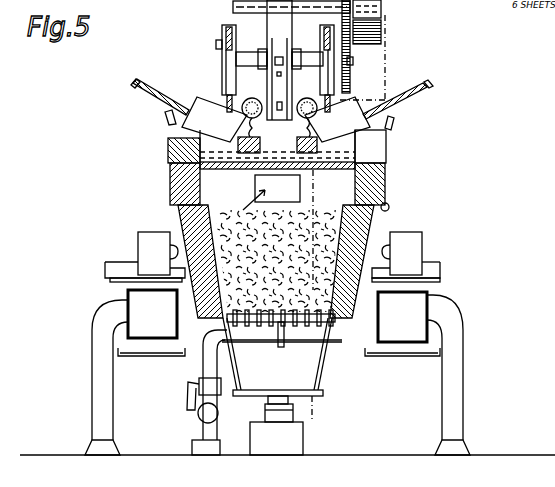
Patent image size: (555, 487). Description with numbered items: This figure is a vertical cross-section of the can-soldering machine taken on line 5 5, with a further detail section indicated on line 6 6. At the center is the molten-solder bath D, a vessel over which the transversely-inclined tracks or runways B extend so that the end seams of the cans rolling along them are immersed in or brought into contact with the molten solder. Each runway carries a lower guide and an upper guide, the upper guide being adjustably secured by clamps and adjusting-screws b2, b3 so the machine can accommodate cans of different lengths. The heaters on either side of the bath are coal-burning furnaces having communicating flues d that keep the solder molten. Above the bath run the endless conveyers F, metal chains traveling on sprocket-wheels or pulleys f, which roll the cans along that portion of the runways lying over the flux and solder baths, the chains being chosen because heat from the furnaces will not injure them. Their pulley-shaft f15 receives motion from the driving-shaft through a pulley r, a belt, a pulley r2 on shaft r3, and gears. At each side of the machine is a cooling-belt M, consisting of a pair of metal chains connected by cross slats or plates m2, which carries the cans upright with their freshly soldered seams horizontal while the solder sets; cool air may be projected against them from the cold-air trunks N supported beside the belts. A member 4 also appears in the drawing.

The endless chain conveyer F is at (325, 38).
The sprocket-wheel or pulley f is at (294, 72).
The rail 4 is at (343, 13).
The pulley r is at (350, 50).
The pulley r2 is at (375, 37).
The shaft r3 is at (396, 9).
The section line 6 6 is at (385, 30).
The section line 5 5 is at (392, 48).
The pulley-shaft f15 is at (350, 62).
The communicating flue d is at (317, 197).
The pipe p is at (277, 135).
The molten-solder bath D is at (232, 160).
The clamp b2 is at (153, 104).
The adjusting-screw b3 is at (137, 81).
The transversely-inclined track or runway B is at (387, 127).
The cold-air trunk N is at (125, 302).
The cooling-belt M is at (411, 255).
The cross slats or plates m2 is at (150, 273).